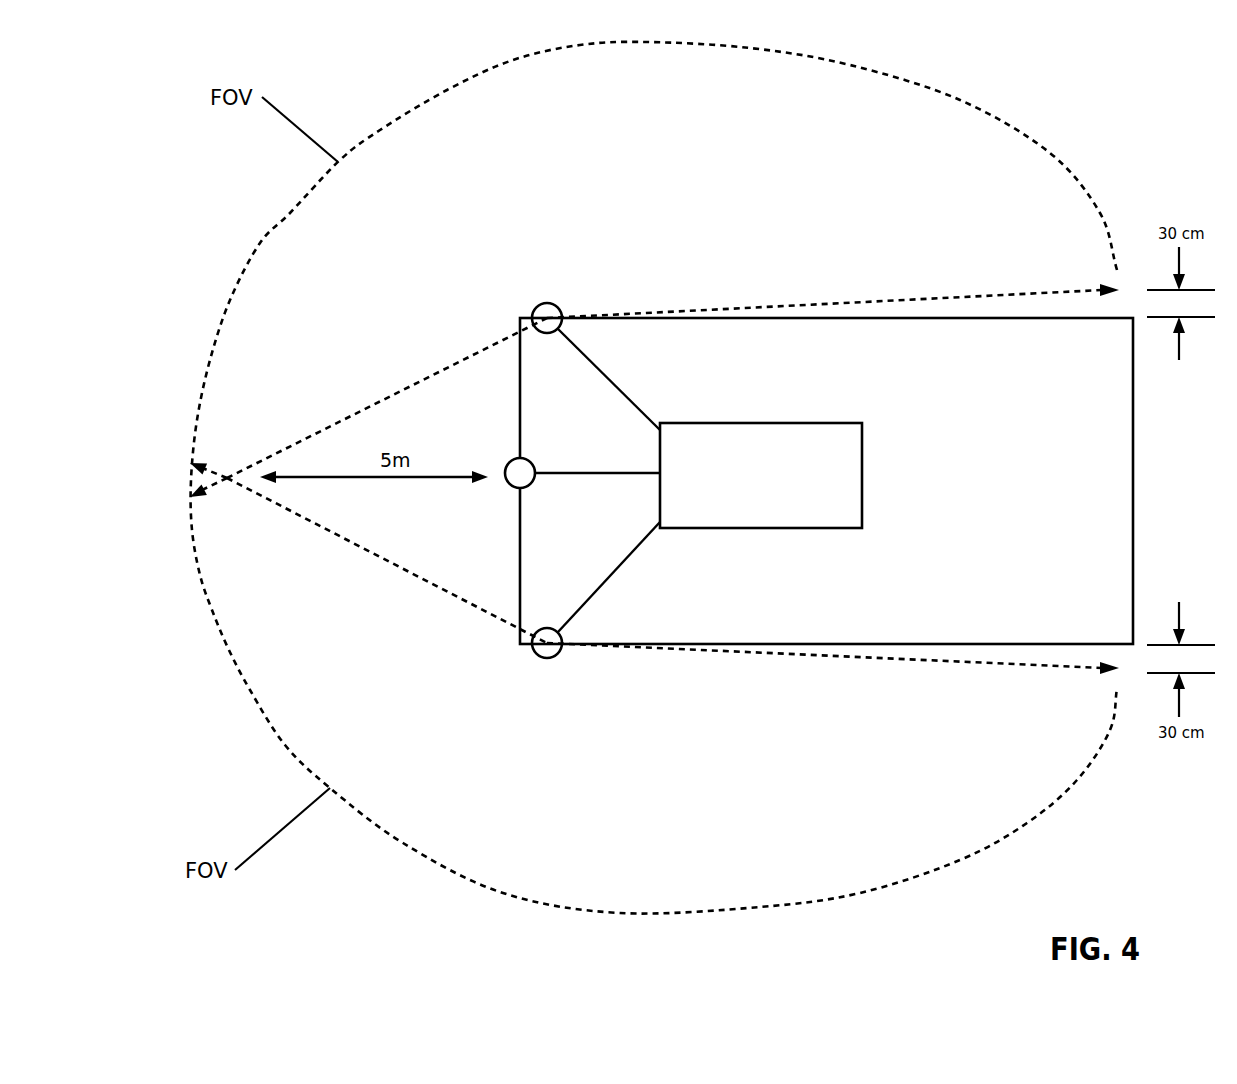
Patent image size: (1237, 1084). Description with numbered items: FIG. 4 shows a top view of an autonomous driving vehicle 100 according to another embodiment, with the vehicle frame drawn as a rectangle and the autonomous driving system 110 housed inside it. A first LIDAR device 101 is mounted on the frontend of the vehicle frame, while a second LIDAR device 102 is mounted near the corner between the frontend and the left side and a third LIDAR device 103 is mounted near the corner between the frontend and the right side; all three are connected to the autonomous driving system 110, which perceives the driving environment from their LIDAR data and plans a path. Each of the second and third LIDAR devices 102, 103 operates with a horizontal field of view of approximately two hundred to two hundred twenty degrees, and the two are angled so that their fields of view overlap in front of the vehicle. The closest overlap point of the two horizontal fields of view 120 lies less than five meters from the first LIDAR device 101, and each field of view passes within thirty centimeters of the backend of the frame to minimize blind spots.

The autonomous driving vehicle 100 is at (1084, 623).
The autonomous driving system 110 is at (778, 512).
The first LIDAR device 101 is at (531, 463).
The second LIDAR device 102 is at (557, 655).
The third LIDAR device 103 is at (557, 308).
The closest overlap point of two horizontal FOVs 120 is at (228, 477).